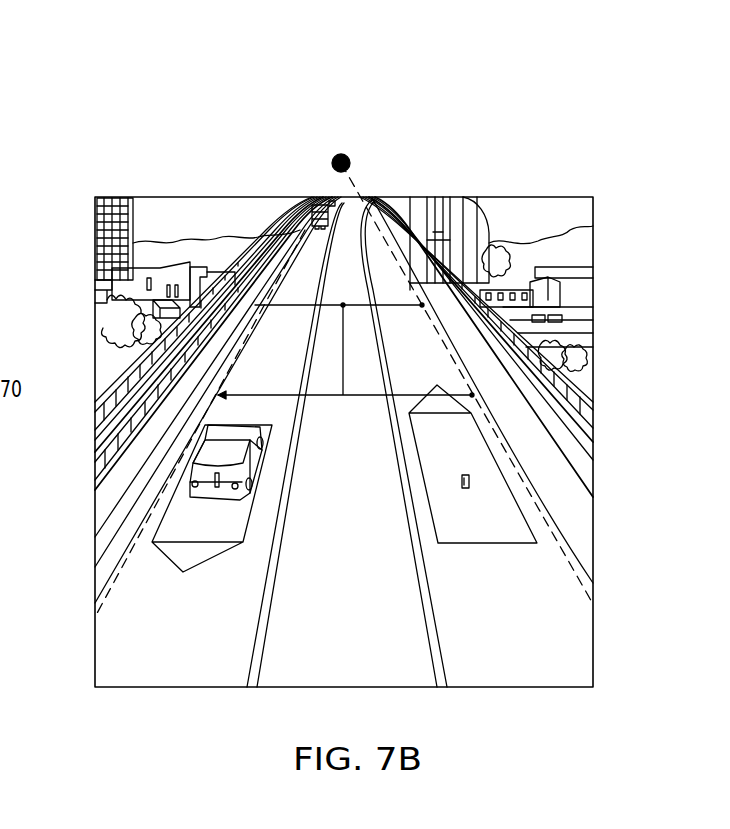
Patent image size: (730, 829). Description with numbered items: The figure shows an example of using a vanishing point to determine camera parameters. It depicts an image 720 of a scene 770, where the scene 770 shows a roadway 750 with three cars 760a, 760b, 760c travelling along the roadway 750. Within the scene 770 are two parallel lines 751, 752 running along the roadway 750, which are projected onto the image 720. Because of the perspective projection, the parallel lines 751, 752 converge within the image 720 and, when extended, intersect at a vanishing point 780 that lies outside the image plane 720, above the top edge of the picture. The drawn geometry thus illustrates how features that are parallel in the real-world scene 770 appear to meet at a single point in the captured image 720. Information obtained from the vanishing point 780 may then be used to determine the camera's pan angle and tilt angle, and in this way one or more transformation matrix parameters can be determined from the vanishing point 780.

The image 720 is at (593, 402).
The roadway 750 is at (557, 645).
The parallel line 751 is at (265, 240).
The parallel line 752 is at (418, 213).
The car 760a is at (200, 470).
The car 760b is at (300, 197).
The car 760c is at (330, 193).
The scene 770 is at (567, 243).
The vanishing point 780 is at (347, 155).